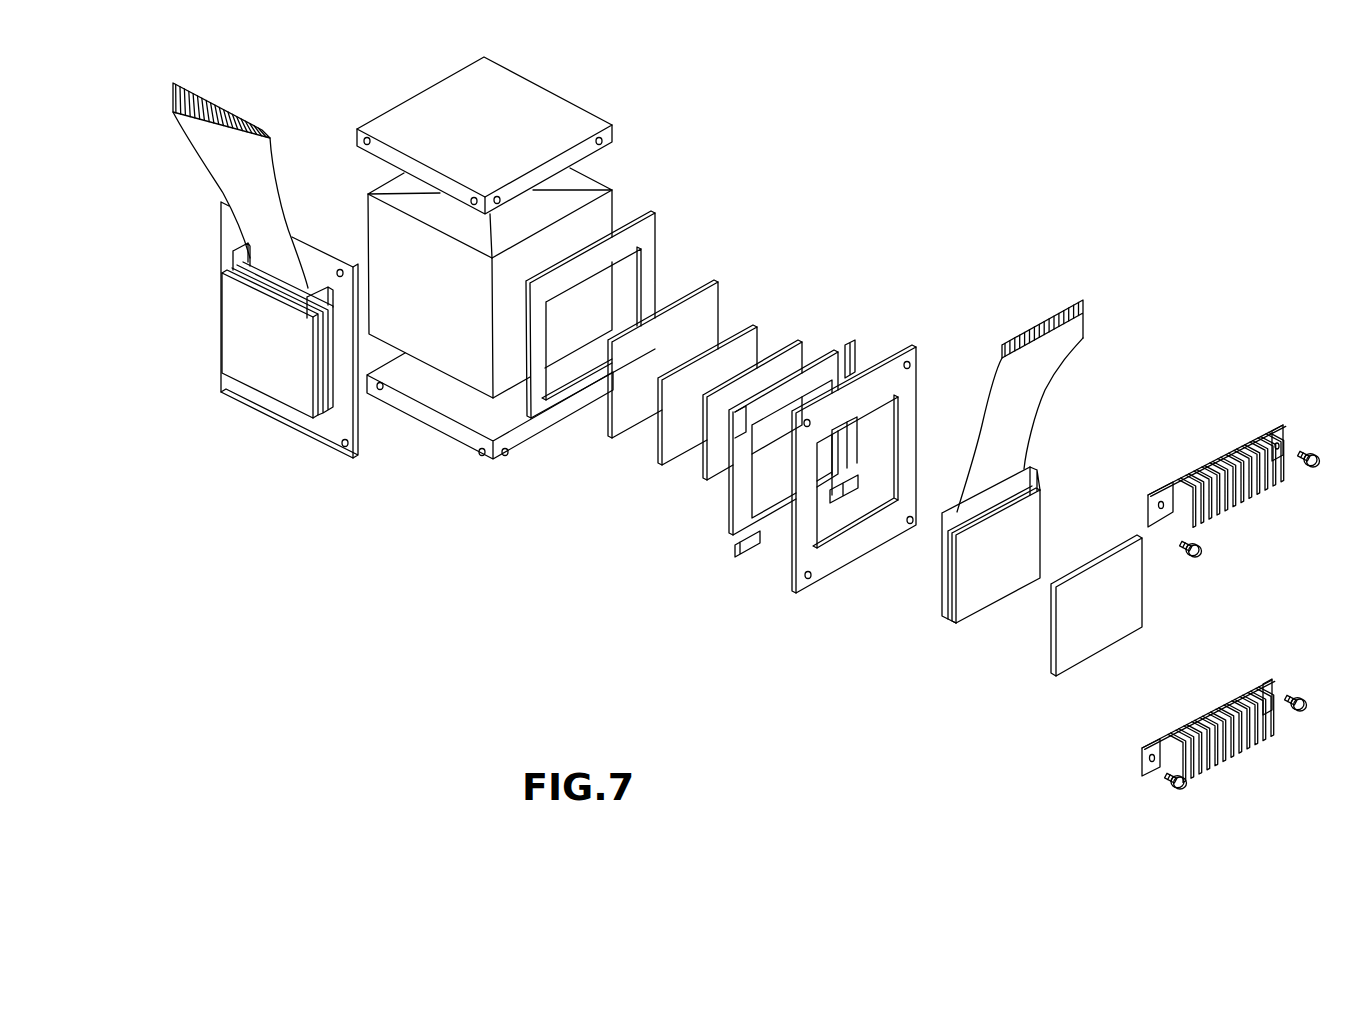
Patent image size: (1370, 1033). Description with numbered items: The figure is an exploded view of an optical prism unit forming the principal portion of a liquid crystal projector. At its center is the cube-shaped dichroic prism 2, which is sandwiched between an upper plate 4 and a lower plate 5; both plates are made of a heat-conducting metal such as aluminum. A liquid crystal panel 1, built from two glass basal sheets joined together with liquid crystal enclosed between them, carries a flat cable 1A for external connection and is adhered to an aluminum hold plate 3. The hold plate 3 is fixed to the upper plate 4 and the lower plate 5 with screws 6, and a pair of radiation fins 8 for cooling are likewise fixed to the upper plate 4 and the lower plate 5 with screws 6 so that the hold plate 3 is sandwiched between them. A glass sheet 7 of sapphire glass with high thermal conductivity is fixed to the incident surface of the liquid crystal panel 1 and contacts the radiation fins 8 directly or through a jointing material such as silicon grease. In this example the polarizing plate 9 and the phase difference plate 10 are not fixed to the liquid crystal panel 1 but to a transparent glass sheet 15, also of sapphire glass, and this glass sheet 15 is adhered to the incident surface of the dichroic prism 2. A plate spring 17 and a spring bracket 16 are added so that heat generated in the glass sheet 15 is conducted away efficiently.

The liquid crystal panel 1 is at (330, 387).
The flexible printed circuit cable 1A is at (267, 132).
The dichroic prism 2 is at (602, 178).
The hold plate 3 is at (795, 573).
The upper plate 4 is at (568, 101).
The lower plate 5 is at (473, 442).
The screws 6 is at (1323, 467).
The glass sheet 7 is at (242, 330).
The radiation fins 8 is at (1262, 432).
The polarizing plate 9 is at (705, 465).
The phase difference plate 10 is at (763, 337).
The transparent glass sheet 15 is at (723, 300).
The spring bracket 16 is at (658, 243).
The plate spring 17 is at (730, 515).